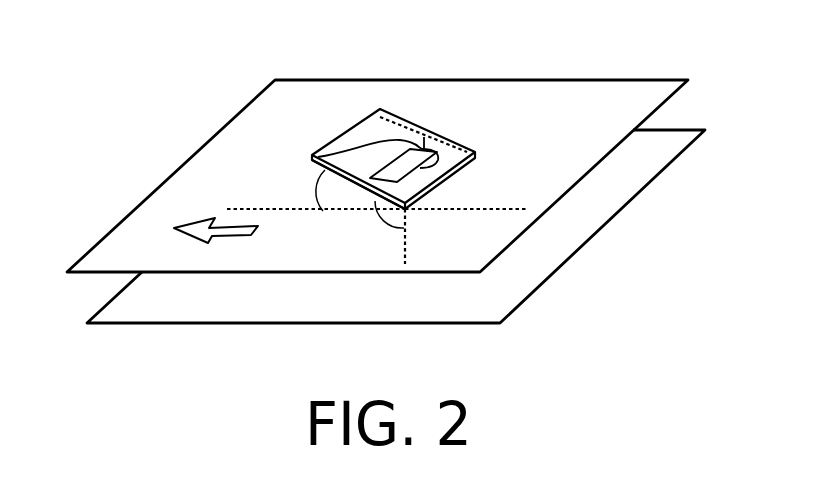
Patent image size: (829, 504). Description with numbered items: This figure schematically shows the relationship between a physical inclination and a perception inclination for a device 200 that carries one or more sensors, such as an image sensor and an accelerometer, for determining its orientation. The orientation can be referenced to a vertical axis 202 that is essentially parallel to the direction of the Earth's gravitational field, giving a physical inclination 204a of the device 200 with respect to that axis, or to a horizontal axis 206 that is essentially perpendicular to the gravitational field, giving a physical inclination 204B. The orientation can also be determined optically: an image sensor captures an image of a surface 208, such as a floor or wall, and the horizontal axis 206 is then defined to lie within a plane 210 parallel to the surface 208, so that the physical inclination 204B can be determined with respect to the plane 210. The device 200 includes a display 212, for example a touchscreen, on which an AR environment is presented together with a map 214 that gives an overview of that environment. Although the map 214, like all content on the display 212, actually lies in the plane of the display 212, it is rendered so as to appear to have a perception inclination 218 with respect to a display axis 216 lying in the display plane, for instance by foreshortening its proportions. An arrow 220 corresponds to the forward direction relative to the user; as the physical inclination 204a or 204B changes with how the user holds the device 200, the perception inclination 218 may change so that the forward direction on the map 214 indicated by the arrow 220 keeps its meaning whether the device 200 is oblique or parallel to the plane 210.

The device 200 is at (385, 115).
The vertical axis 202 is at (408, 214).
The physical inclination 204a is at (380, 231).
The physical inclination 204B is at (319, 204).
The horizontal axis 206 is at (500, 208).
The surface 208 is at (175, 325).
The plane 210 is at (88, 273).
The display 212 is at (355, 128).
The map 214 is at (455, 147).
The display axis 216 is at (398, 123).
The perception inclination 218 is at (333, 170).
The arrow 220 is at (236, 235).